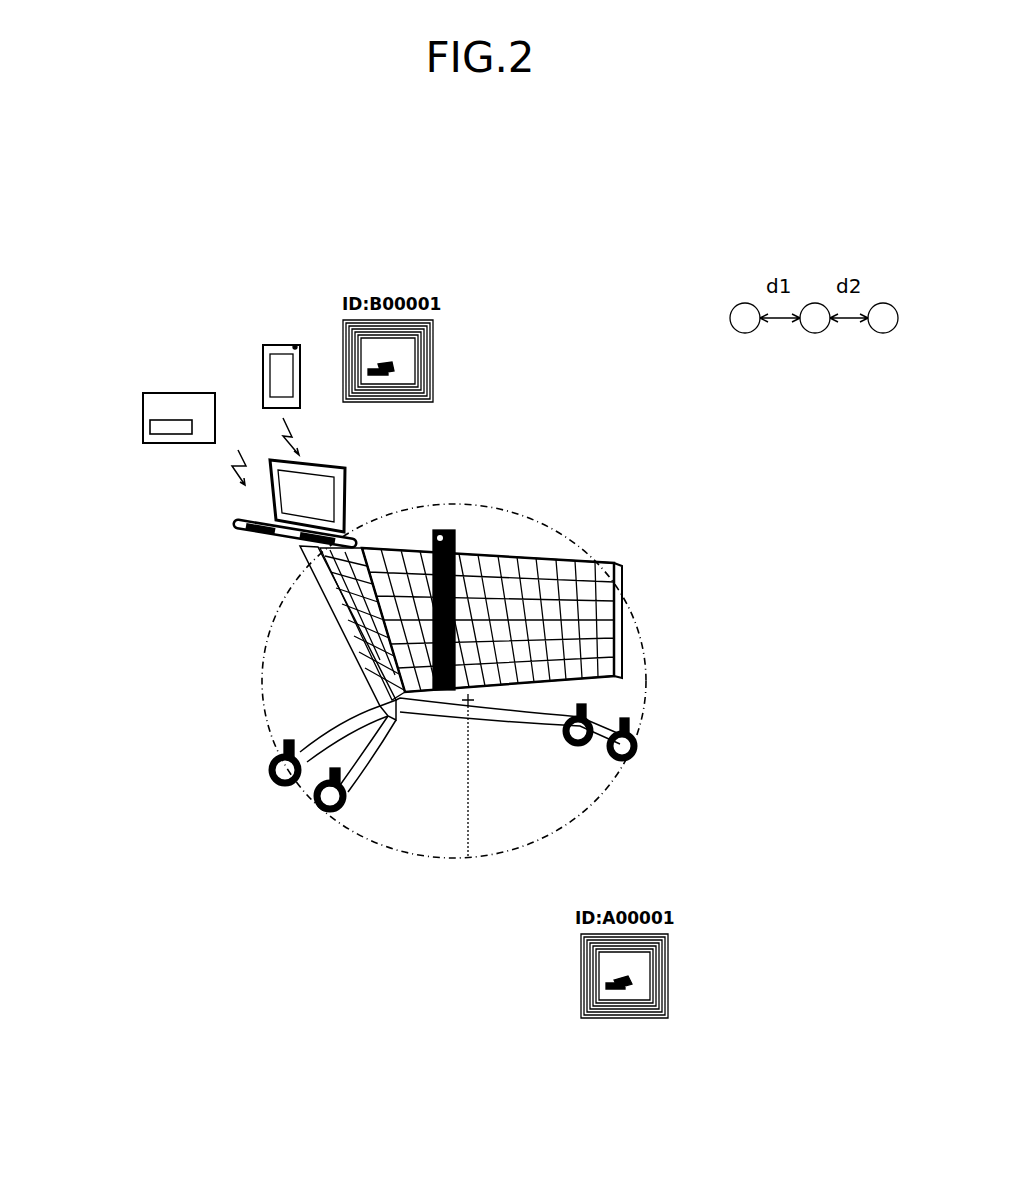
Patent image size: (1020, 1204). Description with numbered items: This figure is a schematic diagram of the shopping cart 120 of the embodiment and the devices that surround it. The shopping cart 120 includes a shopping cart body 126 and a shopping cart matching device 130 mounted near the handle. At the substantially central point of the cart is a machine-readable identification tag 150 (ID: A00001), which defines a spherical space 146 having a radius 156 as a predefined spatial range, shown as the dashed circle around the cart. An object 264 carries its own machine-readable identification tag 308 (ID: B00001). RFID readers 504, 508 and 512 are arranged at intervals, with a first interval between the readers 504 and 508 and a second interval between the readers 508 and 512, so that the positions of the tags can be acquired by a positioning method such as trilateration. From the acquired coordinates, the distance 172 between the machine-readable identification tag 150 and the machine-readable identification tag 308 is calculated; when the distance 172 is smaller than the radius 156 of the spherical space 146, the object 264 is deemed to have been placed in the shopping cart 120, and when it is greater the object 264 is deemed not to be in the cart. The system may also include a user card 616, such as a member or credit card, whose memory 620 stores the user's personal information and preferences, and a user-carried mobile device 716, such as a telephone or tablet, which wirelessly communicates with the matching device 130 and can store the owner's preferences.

The shopping cart 120 is at (268, 768).
The shopping cart body 126 is at (300, 572).
The shopping cart matching device 130 is at (240, 521).
The spherical space 146 is at (640, 618).
The machine-readable identification tag 150 is at (473, 704).
The radius 156 is at (466, 784).
The distance 172 is at (557, 549).
The object 264 is at (462, 546).
The machine-readable identification tag 308 is at (436, 533).
The RFID reader 504 is at (748, 336).
The RFID reader 508 is at (816, 336).
The RFID reader 512 is at (881, 336).
The user card 616 is at (160, 393).
The memory 620 is at (143, 423).
The mobile device 716 is at (280, 345).